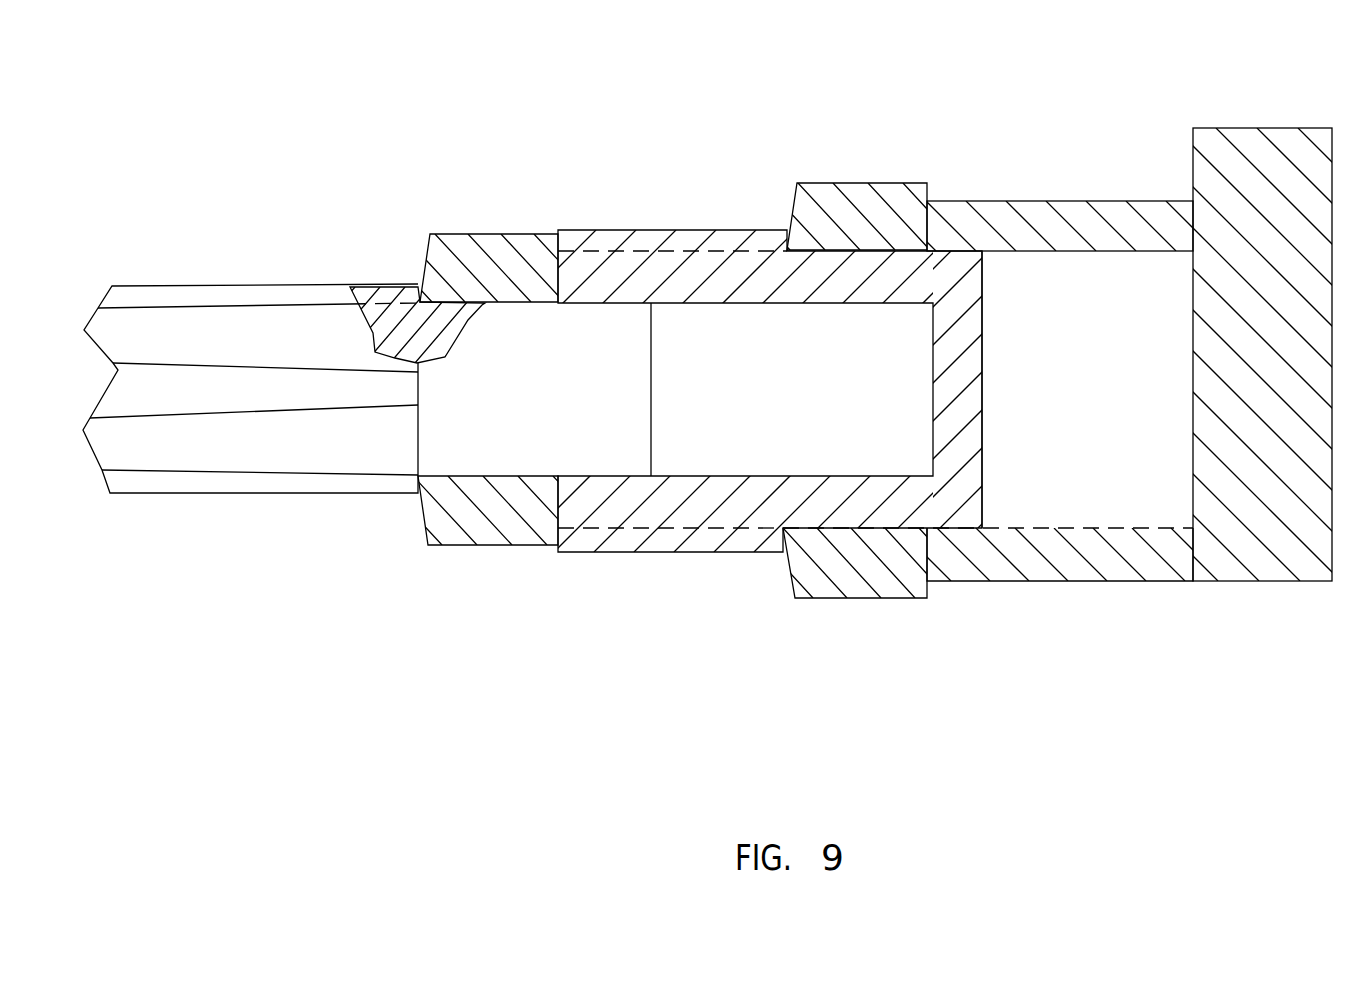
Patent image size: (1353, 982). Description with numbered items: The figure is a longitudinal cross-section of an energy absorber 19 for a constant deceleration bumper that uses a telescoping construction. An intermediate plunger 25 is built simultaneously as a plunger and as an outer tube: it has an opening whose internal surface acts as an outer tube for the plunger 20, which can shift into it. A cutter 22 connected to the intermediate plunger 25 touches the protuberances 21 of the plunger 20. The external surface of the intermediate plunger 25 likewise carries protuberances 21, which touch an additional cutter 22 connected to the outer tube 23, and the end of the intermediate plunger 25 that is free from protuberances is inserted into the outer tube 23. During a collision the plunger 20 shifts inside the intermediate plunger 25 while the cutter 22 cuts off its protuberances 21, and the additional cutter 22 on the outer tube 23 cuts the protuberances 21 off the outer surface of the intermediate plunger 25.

The energy absorber 19 is at (552, 437).
The plunger 20 is at (207, 447).
The protuberances 21 is at (337, 493).
The cutter 22 is at (497, 233).
The outer tube 23 is at (1108, 583).
The intermediate plunger 25 is at (985, 306).